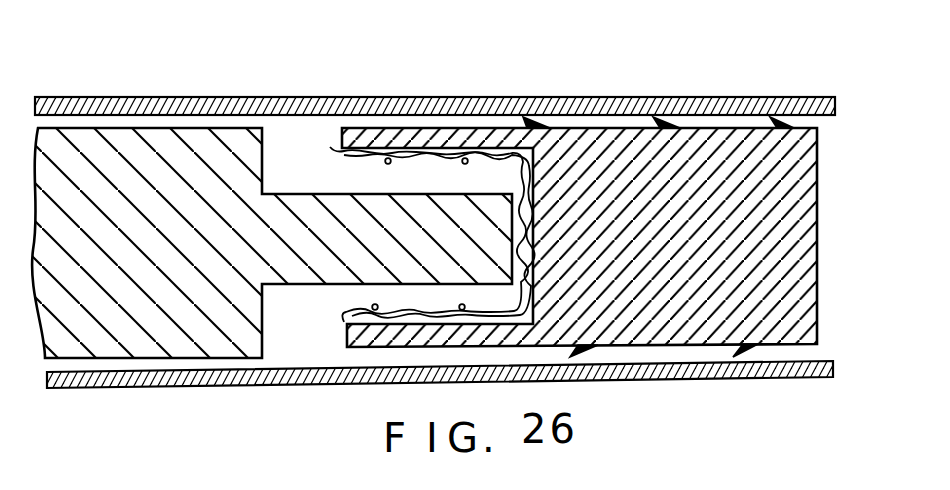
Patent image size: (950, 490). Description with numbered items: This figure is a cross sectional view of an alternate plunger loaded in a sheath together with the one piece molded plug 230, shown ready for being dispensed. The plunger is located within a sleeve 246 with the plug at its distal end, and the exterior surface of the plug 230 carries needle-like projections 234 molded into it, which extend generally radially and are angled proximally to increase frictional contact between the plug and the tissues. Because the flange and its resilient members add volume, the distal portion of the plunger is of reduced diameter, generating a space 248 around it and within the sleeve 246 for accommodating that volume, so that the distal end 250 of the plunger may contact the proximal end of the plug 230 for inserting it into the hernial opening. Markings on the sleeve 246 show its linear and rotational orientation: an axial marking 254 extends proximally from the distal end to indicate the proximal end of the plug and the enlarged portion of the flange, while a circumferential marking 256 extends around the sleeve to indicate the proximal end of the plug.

The plug 230 is at (790, 257).
The needle-like projections 234 is at (801, 97).
The sleeve 246 is at (223, 97).
The space 248 is at (413, 293).
The distal end of the plunger 250 is at (368, 206).
The axial marking 254 is at (672, 97).
The circumferential marking 256 is at (516, 99).